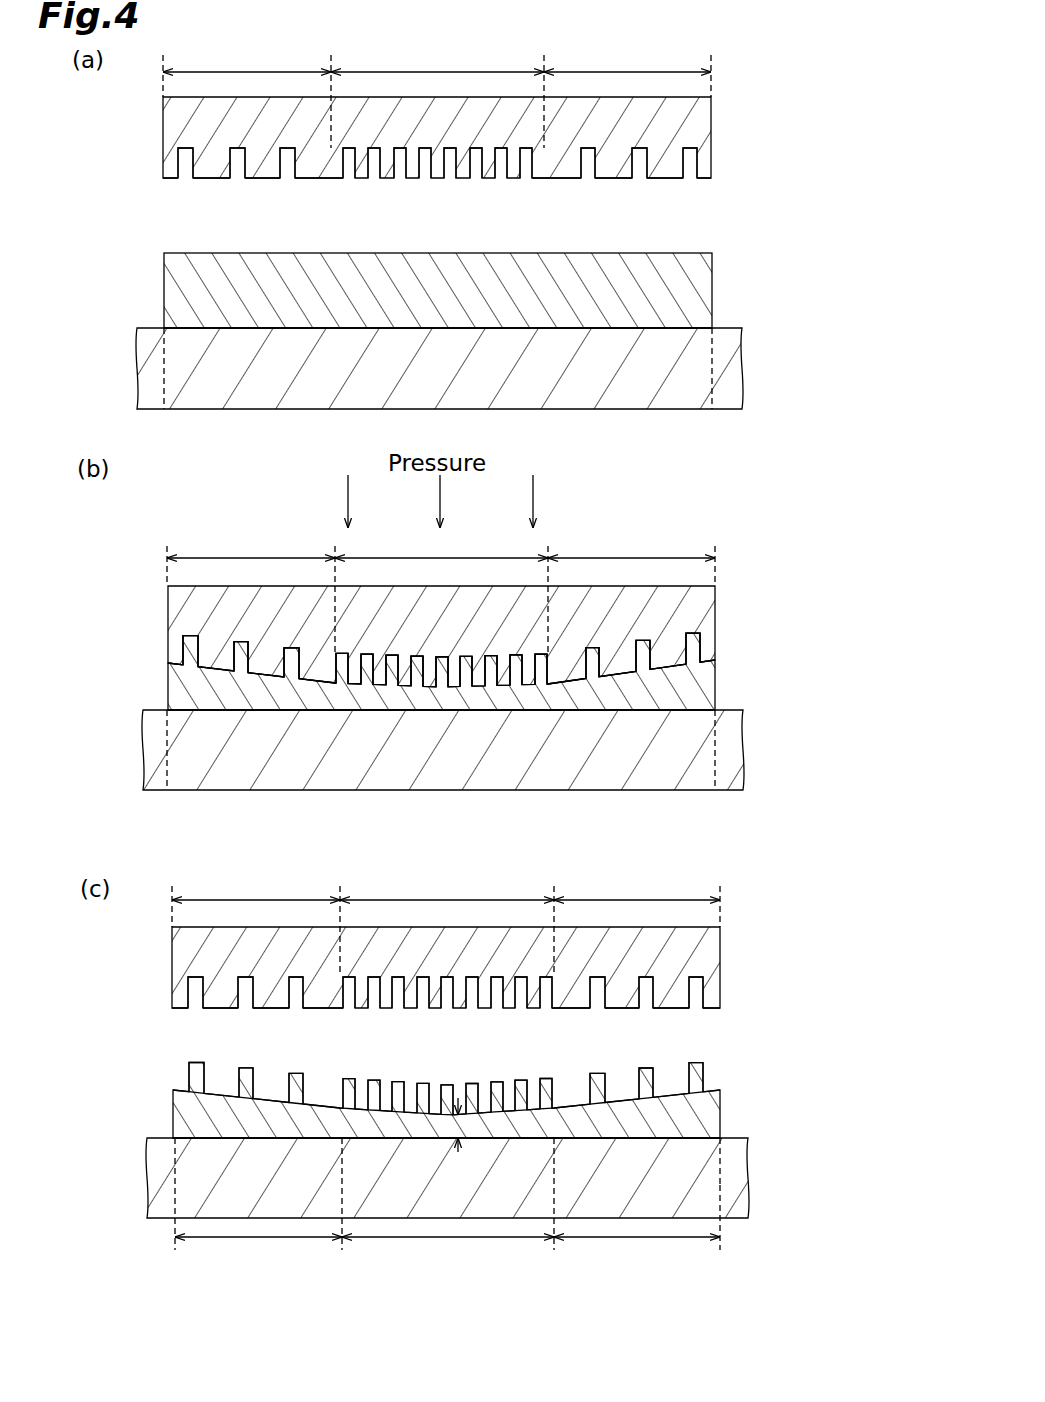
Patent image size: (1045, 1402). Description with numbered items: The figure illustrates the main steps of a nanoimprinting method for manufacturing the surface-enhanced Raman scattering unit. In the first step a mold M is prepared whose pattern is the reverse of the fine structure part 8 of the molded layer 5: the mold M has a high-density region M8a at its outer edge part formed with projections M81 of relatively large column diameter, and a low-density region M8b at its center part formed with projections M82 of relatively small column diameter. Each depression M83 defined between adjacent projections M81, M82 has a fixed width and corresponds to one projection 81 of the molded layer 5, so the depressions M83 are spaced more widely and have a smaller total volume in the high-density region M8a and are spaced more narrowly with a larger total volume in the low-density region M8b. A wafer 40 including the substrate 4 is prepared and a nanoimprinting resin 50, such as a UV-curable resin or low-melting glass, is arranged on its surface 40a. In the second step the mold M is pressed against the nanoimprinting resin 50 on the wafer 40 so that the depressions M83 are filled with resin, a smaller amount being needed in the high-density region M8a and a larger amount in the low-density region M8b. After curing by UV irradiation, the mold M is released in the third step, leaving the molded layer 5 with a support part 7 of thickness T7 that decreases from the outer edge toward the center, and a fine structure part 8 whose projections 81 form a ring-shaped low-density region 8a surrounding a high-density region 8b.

The mold M is at (712, 120).
The projections M81 is at (215, 172).
The projections M82 is at (450, 172).
The depression M83 is at (235, 165).
The high-density region M8a is at (441, 487).
The low-density region M8b is at (442, 511).
The nanoimprinting resin 50 is at (712, 290).
The wafer 40 is at (742, 360).
The surface 40a is at (698, 328).
The substrate 4 is at (712, 375).
The molded layer 5 is at (493, 1081).
The support part 7 is at (720, 1127).
The fine structure part 8 is at (478, 1069).
The projections 81 is at (300, 1090).
The thickness T7 is at (468, 1117).
The low-density region 8a is at (447, 1203).
The high-density region 8b is at (448, 1203).